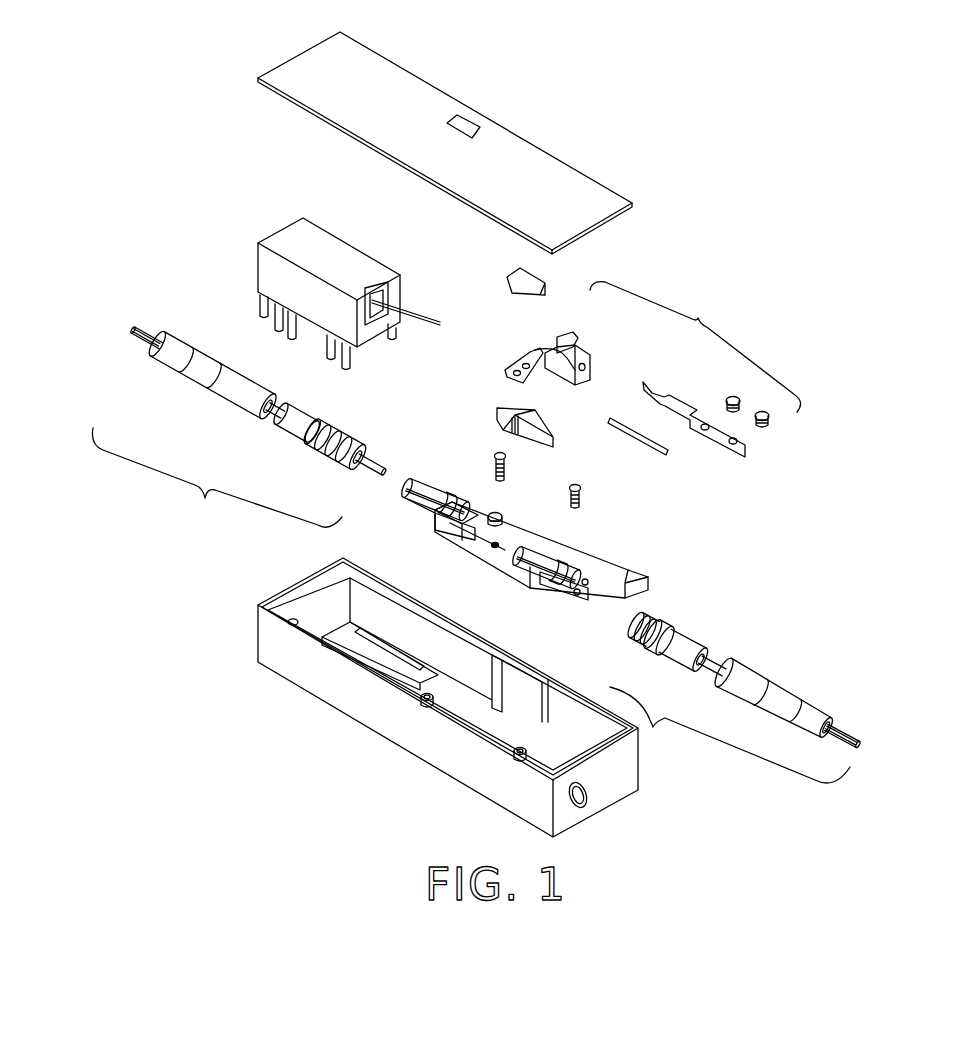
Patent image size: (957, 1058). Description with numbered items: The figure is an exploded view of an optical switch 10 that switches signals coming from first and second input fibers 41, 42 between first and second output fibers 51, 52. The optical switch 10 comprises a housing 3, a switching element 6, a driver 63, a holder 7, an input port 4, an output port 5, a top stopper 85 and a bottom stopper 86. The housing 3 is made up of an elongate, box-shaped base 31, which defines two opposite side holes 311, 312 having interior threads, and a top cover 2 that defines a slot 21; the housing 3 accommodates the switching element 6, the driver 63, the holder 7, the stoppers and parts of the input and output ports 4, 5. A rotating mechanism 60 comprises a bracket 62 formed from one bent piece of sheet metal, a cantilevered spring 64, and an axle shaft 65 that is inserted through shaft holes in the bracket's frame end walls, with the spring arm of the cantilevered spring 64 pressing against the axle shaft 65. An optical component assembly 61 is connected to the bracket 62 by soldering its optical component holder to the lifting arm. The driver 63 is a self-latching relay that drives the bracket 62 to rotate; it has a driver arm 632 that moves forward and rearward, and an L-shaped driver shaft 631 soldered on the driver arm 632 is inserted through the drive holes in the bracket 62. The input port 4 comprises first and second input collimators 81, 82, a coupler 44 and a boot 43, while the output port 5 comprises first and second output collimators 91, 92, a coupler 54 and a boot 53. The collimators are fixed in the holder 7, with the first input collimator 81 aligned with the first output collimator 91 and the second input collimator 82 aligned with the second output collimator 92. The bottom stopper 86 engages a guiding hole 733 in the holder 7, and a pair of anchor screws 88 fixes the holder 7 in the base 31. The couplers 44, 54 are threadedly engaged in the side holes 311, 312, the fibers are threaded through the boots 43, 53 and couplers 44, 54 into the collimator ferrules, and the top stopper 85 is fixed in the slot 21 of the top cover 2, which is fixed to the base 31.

The optical switch 10 is at (850, 132).
The top cover 2 is at (575, 190).
The slot 21 is at (462, 123).
The housing 3 is at (458, 698).
The base 31 is at (396, 725).
The side hole 311 is at (290, 618).
The side hole 312 is at (590, 800).
The input port 4 is at (225, 412).
The first input fiber 41 is at (132, 327).
The second input fiber 42 is at (130, 333).
The boot 43 is at (200, 372).
The coupler 44 is at (298, 428).
The output port 5 is at (769, 697).
The first output fiber 51 is at (858, 738).
The second output fiber 52 is at (848, 752).
The boot 53 is at (785, 697).
The coupler 54 is at (688, 628).
The switching element 6 is at (695, 347).
The rotating mechanism 60 is at (603, 345).
The optical component assembly 61 is at (553, 442).
The bracket 62 is at (552, 342).
The driver 63 is at (348, 258).
The driver shaft 631 is at (432, 305).
The driver arm 632 is at (373, 314).
The cantilevered spring 64 is at (700, 412).
The axle shaft 65 is at (633, 440).
The holder 7 is at (615, 565).
The guiding hole 733 is at (475, 560).
The first input collimator 81 is at (420, 478).
The second input collimator 82 is at (405, 495).
The top stopper 85 is at (535, 280).
The bottom stopper 86 is at (493, 512).
The anchor screws 88 is at (555, 498).
The first output collimator 91 is at (580, 552).
The second output collimator 92 is at (572, 590).